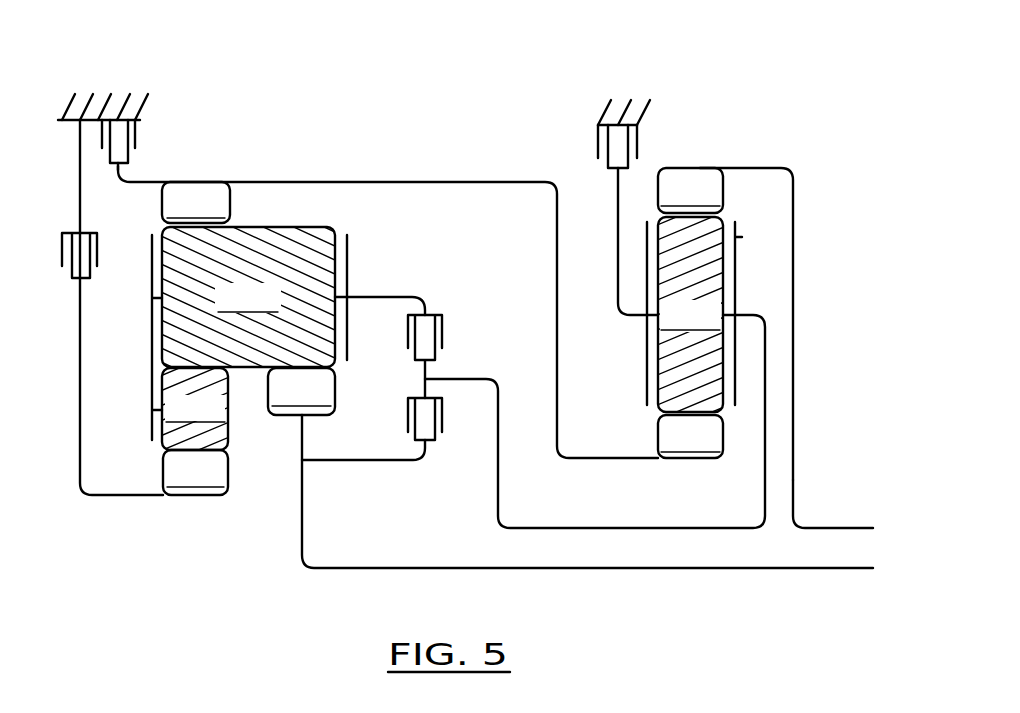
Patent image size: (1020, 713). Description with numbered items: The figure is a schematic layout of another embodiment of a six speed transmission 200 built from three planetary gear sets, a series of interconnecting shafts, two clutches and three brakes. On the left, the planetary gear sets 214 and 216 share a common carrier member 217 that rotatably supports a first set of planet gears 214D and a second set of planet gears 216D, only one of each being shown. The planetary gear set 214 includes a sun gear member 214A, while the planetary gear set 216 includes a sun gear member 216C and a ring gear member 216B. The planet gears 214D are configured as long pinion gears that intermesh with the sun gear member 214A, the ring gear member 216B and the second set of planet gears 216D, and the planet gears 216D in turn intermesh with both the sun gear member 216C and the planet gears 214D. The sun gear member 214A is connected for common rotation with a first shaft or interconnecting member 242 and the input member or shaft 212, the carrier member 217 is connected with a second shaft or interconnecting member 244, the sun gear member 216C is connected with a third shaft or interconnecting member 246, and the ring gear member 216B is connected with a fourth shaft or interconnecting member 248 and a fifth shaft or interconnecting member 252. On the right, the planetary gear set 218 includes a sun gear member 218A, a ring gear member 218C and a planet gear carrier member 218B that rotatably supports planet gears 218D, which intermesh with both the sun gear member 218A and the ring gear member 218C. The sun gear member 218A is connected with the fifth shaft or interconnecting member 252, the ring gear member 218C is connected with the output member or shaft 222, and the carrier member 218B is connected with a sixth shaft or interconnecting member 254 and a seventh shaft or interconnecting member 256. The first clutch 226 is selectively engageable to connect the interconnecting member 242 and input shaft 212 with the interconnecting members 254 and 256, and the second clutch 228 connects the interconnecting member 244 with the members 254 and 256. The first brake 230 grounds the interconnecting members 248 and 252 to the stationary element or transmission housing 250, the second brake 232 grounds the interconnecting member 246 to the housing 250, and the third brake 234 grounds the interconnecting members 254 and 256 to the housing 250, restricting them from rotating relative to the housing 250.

The six speed transmission 200 is at (816, 66).
The input member or shaft 212 is at (798, 571).
The planetary gear set 214 is at (281, 301).
The sun gear member 214A is at (350, 392).
The first set of planet gears 214D is at (248, 297).
The planetary gear set 216 is at (186, 389).
The ring gear member 216B is at (196, 202).
The sun gear member 216C is at (200, 502).
The second set of planet gears 216D is at (195, 407).
The common carrier member 217 is at (150, 388).
The planetary gear set 218 is at (689, 279).
The sun gear member 218A is at (690, 436).
The planet gear carrier member 218B is at (742, 237).
The ring gear member 218C is at (690, 190).
The planet gears 218D is at (690, 315).
The output member or shaft 222 is at (830, 526).
The first clutch 226 is at (443, 424).
The second clutch 228 is at (443, 330).
The first brake 230 is at (137, 138).
The second brake 232 is at (98, 260).
The third brake 234 is at (600, 137).
The first shaft or interconnecting member 242 is at (358, 462).
The second shaft or interconnecting member 244 is at (410, 297).
The third shaft or interconnecting member 246 is at (78, 446).
The fourth shaft or interconnecting member 248 is at (143, 184).
The stationary element or transmission housing 250 is at (145, 110).
The fifth shaft or interconnecting member 252 is at (345, 180).
The sixth shaft or interconnecting member 254 is at (616, 230).
The seventh shaft or interconnecting member 256 is at (767, 427).